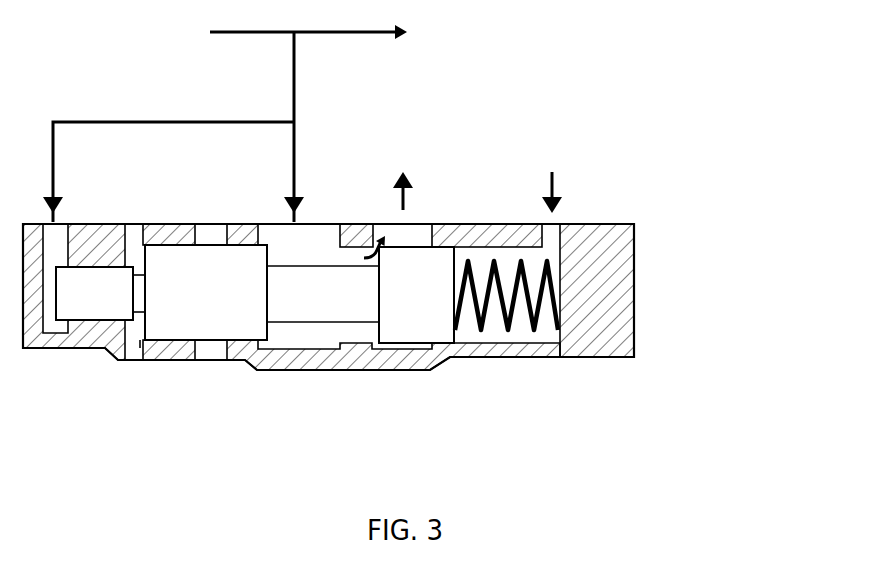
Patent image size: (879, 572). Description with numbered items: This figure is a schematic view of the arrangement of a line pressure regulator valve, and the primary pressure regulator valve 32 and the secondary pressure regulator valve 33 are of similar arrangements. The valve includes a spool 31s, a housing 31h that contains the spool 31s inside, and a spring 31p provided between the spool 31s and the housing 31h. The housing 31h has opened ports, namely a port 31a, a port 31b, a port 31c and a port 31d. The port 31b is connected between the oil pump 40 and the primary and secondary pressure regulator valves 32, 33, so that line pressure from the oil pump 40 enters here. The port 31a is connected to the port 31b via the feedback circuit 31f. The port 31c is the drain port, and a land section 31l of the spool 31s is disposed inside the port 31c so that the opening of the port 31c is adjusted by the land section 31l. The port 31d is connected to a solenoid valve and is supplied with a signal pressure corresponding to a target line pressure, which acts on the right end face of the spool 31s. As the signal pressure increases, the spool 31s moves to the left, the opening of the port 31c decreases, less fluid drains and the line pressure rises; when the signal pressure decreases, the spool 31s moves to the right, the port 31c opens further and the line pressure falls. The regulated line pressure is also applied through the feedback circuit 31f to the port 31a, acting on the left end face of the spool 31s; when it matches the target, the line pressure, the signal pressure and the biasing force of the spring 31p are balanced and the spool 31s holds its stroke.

The port 31a is at (63, 218).
The port 31b is at (273, 220).
The drain port 31c is at (387, 222).
The port 31d is at (557, 222).
The feedback circuit 31f is at (162, 117).
The housing 31h is at (408, 370).
The land section 31l is at (392, 333).
The spring 31p is at (503, 330).
The spool 31s is at (255, 345).
The oil pump 40 is at (248, 111).
The primary pressure regulator valve 32 is at (614, 19).
The secondary pressure regulator valve 33 is at (630, 46).